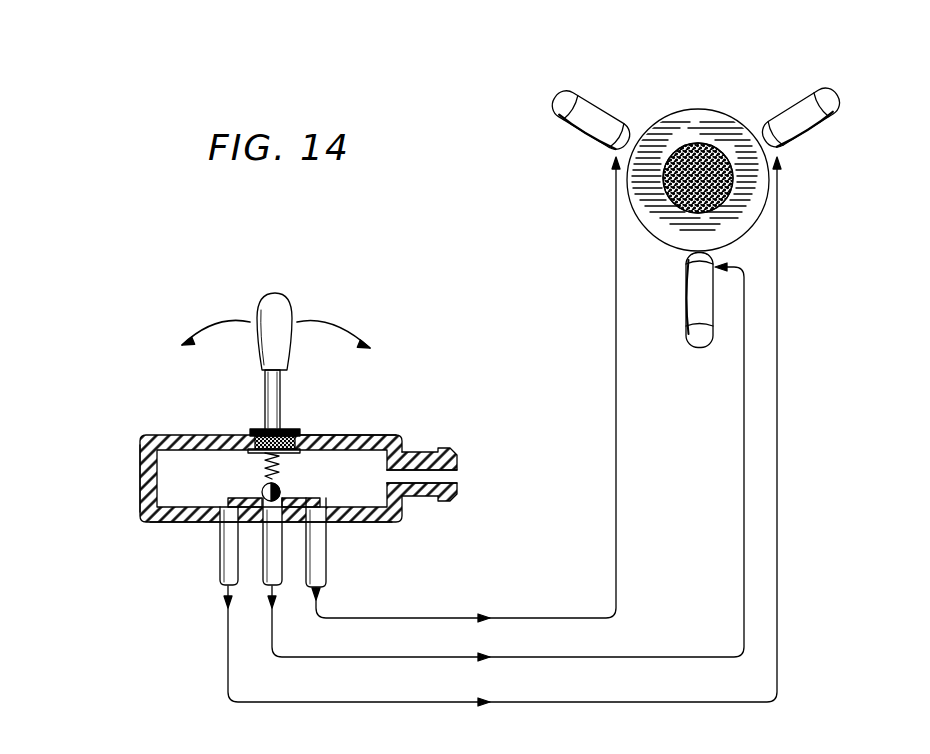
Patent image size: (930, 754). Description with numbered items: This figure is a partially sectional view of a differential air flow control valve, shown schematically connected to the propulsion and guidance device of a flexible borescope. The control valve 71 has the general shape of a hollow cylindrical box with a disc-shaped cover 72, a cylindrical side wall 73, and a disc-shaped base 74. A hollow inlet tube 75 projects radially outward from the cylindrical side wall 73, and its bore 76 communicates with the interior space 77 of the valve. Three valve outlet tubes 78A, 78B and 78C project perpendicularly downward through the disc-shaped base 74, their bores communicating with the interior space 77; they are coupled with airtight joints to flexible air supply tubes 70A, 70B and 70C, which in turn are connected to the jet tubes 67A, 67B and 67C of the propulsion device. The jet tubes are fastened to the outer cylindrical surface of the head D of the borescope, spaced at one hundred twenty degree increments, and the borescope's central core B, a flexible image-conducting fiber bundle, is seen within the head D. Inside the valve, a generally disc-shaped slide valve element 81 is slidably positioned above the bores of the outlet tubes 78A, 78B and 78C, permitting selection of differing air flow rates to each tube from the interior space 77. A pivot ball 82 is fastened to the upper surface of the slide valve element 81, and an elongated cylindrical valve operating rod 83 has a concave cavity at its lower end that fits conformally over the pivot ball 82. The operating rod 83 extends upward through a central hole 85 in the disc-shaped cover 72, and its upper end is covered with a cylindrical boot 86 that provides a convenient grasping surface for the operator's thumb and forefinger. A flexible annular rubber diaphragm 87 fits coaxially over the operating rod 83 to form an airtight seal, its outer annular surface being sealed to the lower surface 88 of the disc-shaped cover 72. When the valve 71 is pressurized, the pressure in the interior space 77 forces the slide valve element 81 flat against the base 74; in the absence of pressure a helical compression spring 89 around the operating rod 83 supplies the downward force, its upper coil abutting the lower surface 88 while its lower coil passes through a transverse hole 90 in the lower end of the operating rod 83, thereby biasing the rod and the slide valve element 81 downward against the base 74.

The control valve 71 is at (403, 409).
The disc-shaped cover 72 is at (165, 435).
The cylindrical side wall 73 is at (142, 448).
The disc-shaped base 74 is at (160, 522).
The hollow inlet tube 75 is at (408, 454).
The bore 76 is at (455, 478).
The interior space 77 is at (158, 468).
The valve outlet tube 78A is at (272, 541).
The valve outlet tube 78B is at (326, 572).
The valve outlet tube 78C is at (220, 566).
The flexible air supply tube 70A is at (280, 650).
The flexible air supply tube 70B is at (320, 616).
The flexible air supply tube 70C is at (228, 695).
The slide valve element 81 is at (318, 500).
The pivot ball 82 is at (262, 490).
The valve operating rod 83 is at (280, 380).
The central hole 85 is at (240, 437).
The cylindrical boot 86 is at (283, 304).
The rubber diaphragm 87 is at (290, 430).
The lower surface 88 is at (345, 435).
The helical compression spring 89 is at (265, 462).
The transverse hole 90 is at (282, 496).
The jet tube 67A is at (679, 317).
The jet tube 67B is at (628, 103).
The jet tube 67C is at (797, 86).
The head D is at (692, 108).
The central core B is at (716, 150).